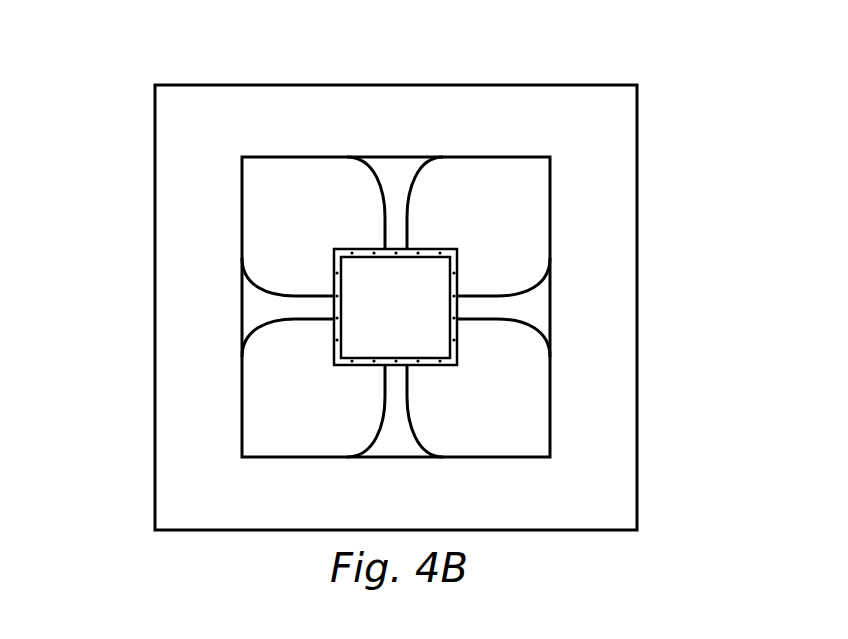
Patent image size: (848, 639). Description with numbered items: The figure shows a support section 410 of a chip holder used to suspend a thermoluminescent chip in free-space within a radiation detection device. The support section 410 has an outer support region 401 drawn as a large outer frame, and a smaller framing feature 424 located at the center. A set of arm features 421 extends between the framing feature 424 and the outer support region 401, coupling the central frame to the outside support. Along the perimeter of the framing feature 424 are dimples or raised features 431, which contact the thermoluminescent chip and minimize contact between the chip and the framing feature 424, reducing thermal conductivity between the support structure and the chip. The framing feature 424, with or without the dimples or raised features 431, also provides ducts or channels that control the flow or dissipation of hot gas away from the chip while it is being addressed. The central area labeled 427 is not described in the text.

The support section 410 is at (122, 67).
The outer support region 401 is at (602, 252).
The arm features 421 is at (523, 330).
The framing feature 424 is at (436, 364).
The central platform 427 is at (395, 307).
The dimples or raised features 431 is at (374, 252).